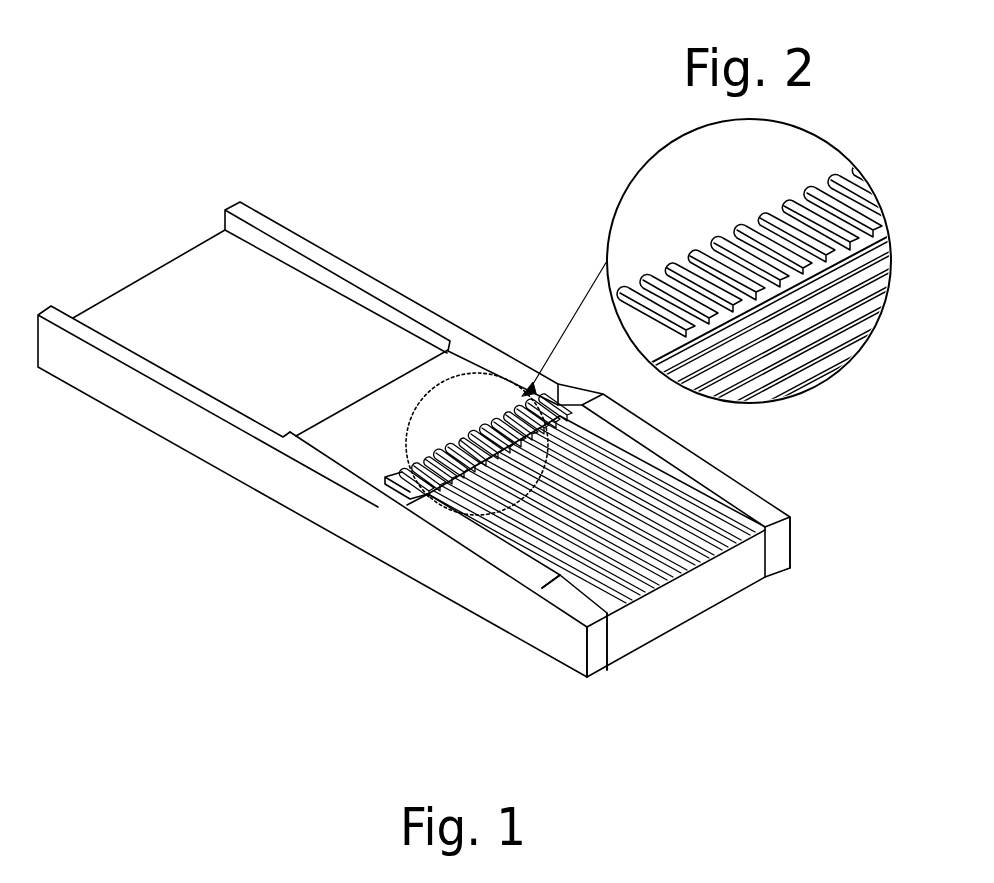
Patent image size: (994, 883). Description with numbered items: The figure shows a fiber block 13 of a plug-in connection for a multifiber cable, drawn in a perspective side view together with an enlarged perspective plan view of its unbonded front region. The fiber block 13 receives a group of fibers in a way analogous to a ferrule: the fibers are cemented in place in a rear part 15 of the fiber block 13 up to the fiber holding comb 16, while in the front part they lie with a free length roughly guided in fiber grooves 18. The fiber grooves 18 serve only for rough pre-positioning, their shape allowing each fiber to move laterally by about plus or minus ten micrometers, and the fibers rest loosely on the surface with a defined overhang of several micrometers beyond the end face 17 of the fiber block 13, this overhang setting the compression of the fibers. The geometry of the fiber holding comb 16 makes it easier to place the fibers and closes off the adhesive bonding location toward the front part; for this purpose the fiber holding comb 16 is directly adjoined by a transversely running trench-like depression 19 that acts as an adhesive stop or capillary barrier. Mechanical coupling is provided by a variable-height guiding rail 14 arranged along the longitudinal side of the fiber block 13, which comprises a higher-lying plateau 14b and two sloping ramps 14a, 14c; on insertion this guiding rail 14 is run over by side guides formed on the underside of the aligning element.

In FIG. 1, the fiber block 13 is at (418, 220).
In FIG. 1, the guiding rail 14 is at (447, 547).
In FIG. 1, the sloping ramp 14a is at (395, 495).
In FIG. 1, the plateau 14b is at (495, 540).
In FIG. 1, the sloping ramp 14c is at (577, 602).
In FIG. 1, the rear part 15 is at (245, 335).
In FIG. 1, the fiber holding comb 16 is at (665, 277).
In FIG. 2, the fiber holding comb 16 is at (764, 279).
In FIG. 1, the end face 17 is at (593, 653).
In FIG. 1, the fiber grooves 18 is at (800, 362).
In FIG. 2, the fiber grooves 18 is at (800, 362).
In FIG. 2, the trench-like depression 19 is at (772, 262).